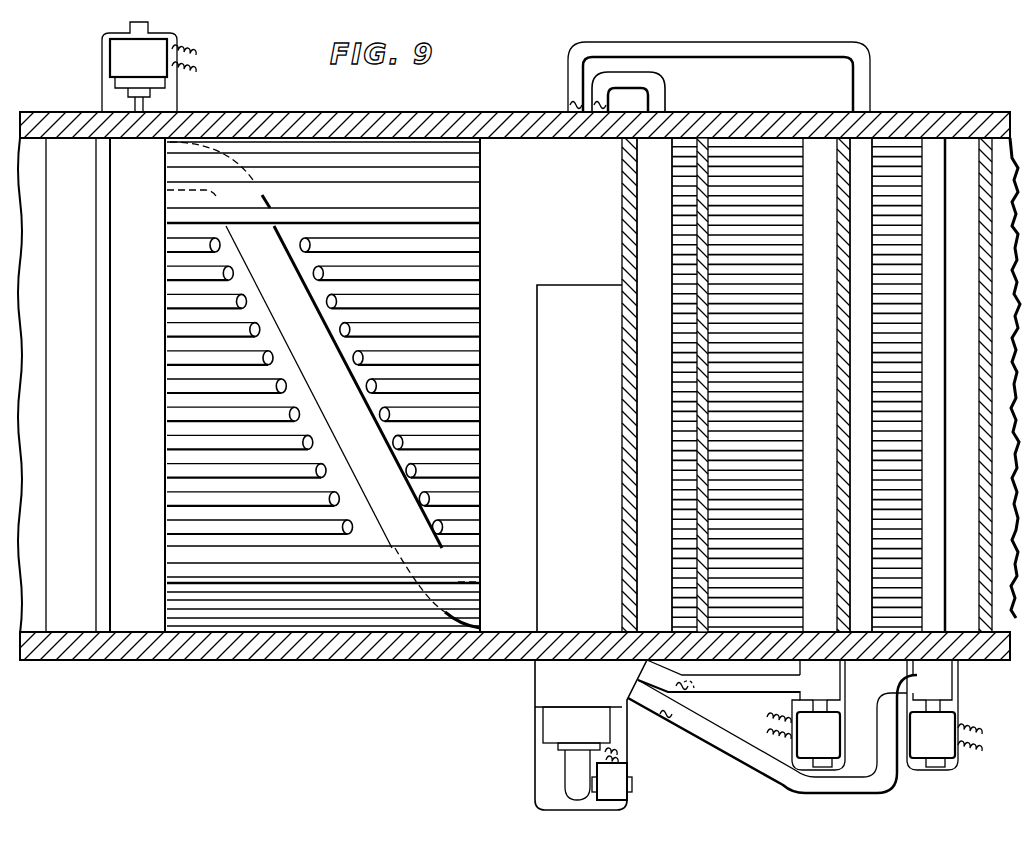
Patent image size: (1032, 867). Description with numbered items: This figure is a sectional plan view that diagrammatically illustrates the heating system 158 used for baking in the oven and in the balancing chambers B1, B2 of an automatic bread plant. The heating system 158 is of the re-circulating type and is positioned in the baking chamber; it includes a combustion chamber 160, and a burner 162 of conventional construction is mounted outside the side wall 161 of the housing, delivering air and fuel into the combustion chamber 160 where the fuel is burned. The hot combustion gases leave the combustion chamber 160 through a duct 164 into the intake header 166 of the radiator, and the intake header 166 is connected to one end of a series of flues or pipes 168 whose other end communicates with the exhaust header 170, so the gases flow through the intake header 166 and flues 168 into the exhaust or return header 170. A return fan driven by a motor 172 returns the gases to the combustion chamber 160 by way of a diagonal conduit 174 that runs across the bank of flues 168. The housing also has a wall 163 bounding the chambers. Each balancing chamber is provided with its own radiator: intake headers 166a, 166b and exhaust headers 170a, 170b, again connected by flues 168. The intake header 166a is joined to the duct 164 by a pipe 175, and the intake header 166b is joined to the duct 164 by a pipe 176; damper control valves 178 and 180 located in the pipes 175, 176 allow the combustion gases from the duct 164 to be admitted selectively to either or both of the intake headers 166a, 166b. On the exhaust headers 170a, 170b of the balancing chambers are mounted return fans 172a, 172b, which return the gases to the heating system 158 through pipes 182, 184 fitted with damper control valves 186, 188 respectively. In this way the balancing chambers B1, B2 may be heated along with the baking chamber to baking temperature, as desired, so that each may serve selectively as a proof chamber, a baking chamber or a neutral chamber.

The heating system 158 is at (571, 715).
The combustion chamber 160 is at (580, 620).
The side wall 161 is at (345, 654).
The burner 162 is at (558, 727).
The wall 163 is at (333, 128).
The duct 164 is at (553, 150).
The intake header 166 is at (518, 462).
The intake header 166a is at (655, 148).
The intake header 166b is at (858, 153).
The flues or pipes 168 is at (480, 212).
The exhaust header 170 is at (143, 148).
The exhaust header 170a is at (822, 150).
The exhaust header 170b is at (935, 150).
The motor 172 is at (122, 52).
The return fan 172a is at (806, 715).
The return fan 172b is at (944, 715).
The diagonal conduit 174 is at (218, 200).
The pipe 175 is at (640, 90).
The pipe 176 is at (710, 55).
The damper control valve 178 is at (601, 100).
The damper control valve 180 is at (572, 100).
The pipe 182 is at (753, 683).
The pipe 184 is at (736, 746).
The damper control valve 186 is at (701, 698).
The damper control valve 188 is at (662, 716).
The balancing chamber B1 is at (905, 630).
The balancing chamber B2 is at (746, 145).